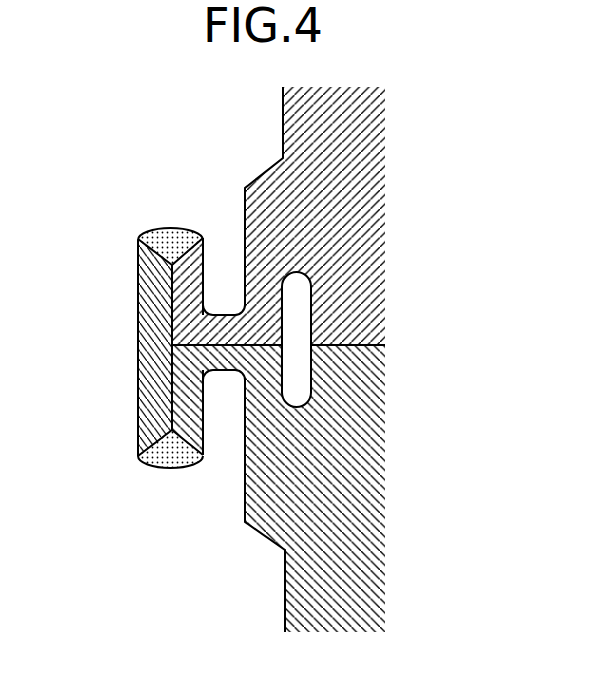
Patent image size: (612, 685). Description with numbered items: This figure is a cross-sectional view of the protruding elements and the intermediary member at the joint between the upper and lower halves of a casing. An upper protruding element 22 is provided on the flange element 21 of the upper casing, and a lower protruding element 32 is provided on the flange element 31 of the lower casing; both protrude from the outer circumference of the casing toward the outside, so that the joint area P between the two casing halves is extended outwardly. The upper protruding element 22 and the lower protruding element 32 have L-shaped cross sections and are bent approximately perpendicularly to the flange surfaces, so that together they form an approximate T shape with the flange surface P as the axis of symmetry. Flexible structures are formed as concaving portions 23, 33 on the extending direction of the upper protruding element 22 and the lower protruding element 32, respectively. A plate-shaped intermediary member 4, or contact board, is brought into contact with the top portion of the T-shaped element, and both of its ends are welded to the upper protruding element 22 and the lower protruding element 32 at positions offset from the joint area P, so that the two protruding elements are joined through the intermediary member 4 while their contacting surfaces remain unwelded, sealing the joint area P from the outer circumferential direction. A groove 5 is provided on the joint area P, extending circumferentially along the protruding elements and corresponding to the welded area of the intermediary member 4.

The flange element 21 is at (260, 179).
The upper protruding element 22 is at (204, 268).
The concaving portion 23 is at (220, 298).
The intermediary member 4 is at (138, 366).
The groove 5 is at (293, 377).
The joint area P is at (357, 345).
The flange element 31 is at (285, 583).
The lower protruding element 32 is at (203, 428).
The concaving portion 33 is at (217, 392).